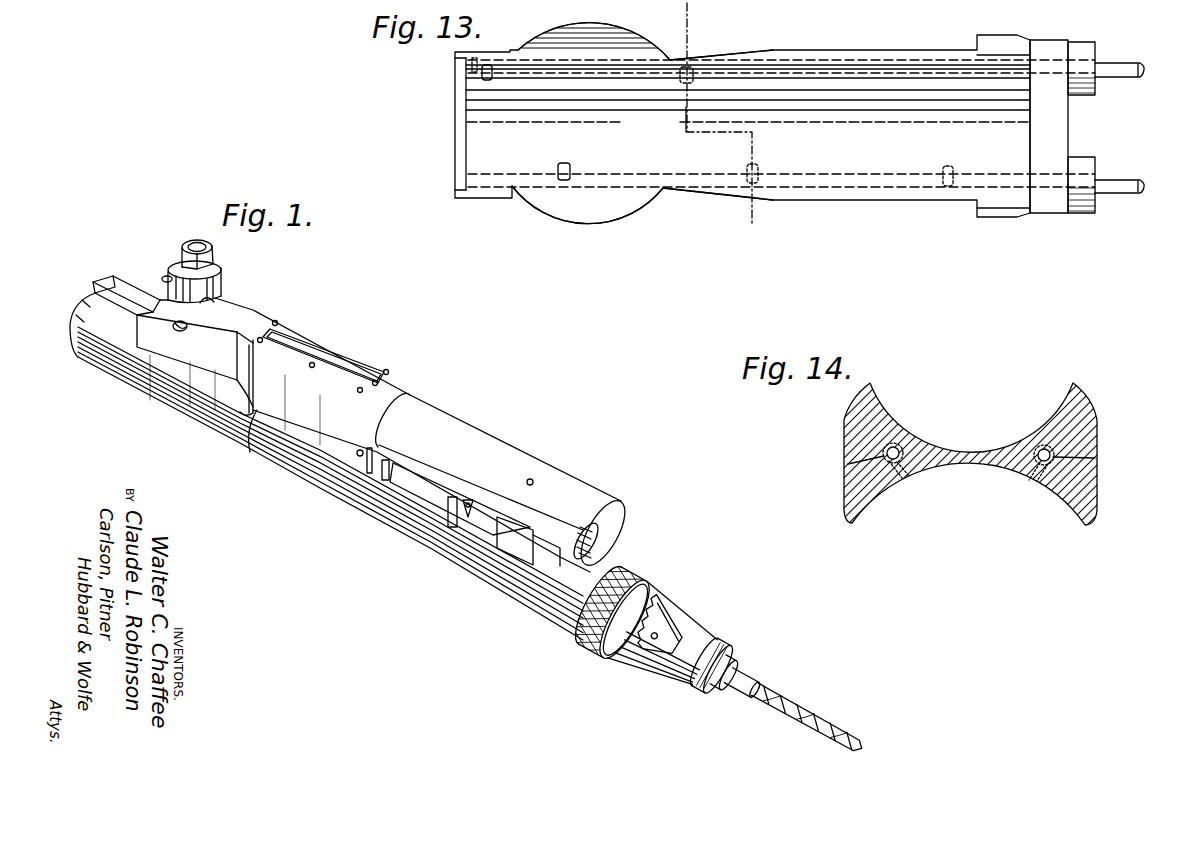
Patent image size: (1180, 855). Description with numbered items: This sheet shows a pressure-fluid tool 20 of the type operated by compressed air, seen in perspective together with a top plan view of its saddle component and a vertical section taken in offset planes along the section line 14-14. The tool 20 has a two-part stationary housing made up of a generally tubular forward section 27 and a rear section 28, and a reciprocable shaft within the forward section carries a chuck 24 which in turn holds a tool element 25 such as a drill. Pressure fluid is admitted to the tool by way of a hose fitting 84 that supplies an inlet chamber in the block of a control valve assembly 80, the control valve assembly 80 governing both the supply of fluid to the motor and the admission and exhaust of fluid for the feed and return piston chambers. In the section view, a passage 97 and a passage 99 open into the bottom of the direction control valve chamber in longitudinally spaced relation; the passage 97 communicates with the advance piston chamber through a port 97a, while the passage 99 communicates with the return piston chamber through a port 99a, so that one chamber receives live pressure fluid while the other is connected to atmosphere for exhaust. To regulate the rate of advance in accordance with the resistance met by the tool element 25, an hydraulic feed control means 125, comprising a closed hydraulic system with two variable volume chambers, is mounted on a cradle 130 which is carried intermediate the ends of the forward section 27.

In FIG. 1, the tool 20 is at (328, 500).
In FIG. 1, the chuck 24 is at (660, 645).
In FIG. 1, the tool element 25 is at (790, 683).
In FIG. 1, the forward section 27 is at (433, 538).
In FIG. 1, the rear section 28 is at (234, 440).
In FIG. 1, the control valve assembly 80 is at (219, 283).
In FIG. 1, the hose fitting 84 is at (181, 249).
In FIG. 1, the hydraulic feed control means 125 is at (498, 440).
In FIG. 1, the cradle 130 is at (497, 543).
In FIG. 13, the cradle 130 is at (700, 203).
In FIG. 14, the cradle 130 is at (851, 442).
In FIG. 13, the passage 97 is at (845, 76).
In FIG. 14, the passage 97 is at (848, 464).
In FIG. 13, the port 97a is at (692, 80).
In FIG. 14, the port 97a is at (908, 474).
In FIG. 13, the passage 99 is at (848, 178).
In FIG. 14, the passage 99 is at (1095, 458).
In FIG. 13, the port 99a is at (760, 167).
In FIG. 14, the port 99a is at (1033, 478).
In FIG. 13, the section line 14- 14 is at (782, 291).